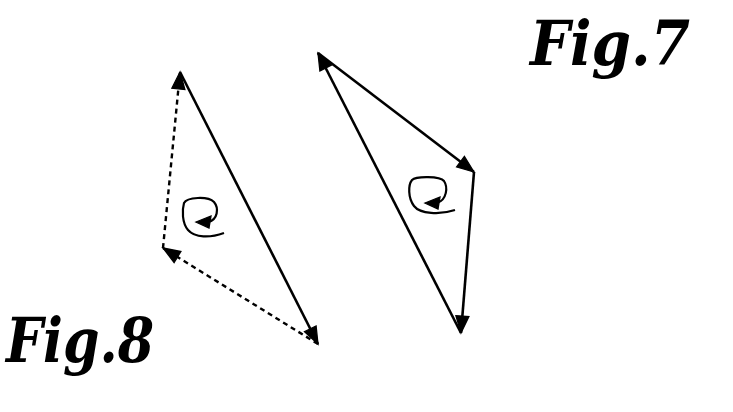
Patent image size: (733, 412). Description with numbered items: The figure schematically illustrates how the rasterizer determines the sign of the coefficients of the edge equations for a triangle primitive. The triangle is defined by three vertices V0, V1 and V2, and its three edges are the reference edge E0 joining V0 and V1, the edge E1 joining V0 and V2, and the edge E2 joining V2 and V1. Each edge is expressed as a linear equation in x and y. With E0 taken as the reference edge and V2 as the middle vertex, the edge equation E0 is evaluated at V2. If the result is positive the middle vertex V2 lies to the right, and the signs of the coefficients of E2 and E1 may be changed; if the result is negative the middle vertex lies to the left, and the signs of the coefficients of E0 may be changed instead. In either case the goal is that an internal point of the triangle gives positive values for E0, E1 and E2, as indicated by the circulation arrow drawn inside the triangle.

In FIG. 8, the vertex V0 is at (326, 355).
In FIG. 7, the vertex V0 is at (477, 340).
In FIG. 8, the vertex V1 is at (185, 61).
In FIG. 7, the vertex V1 is at (330, 45).
In FIG. 8, the middle vertex V2 is at (149, 250).
In FIG. 7, the middle vertex V2 is at (488, 162).
In FIG. 8, the reference edge E0 is at (226, 164).
In FIG. 7, the reference edge E0 is at (375, 162).
In FIG. 8, the edge E1 is at (250, 305).
In FIG. 7, the edge E1 is at (472, 232).
In FIG. 8, the edge E2 is at (170, 158).
In FIG. 7, the edge E2 is at (388, 104).